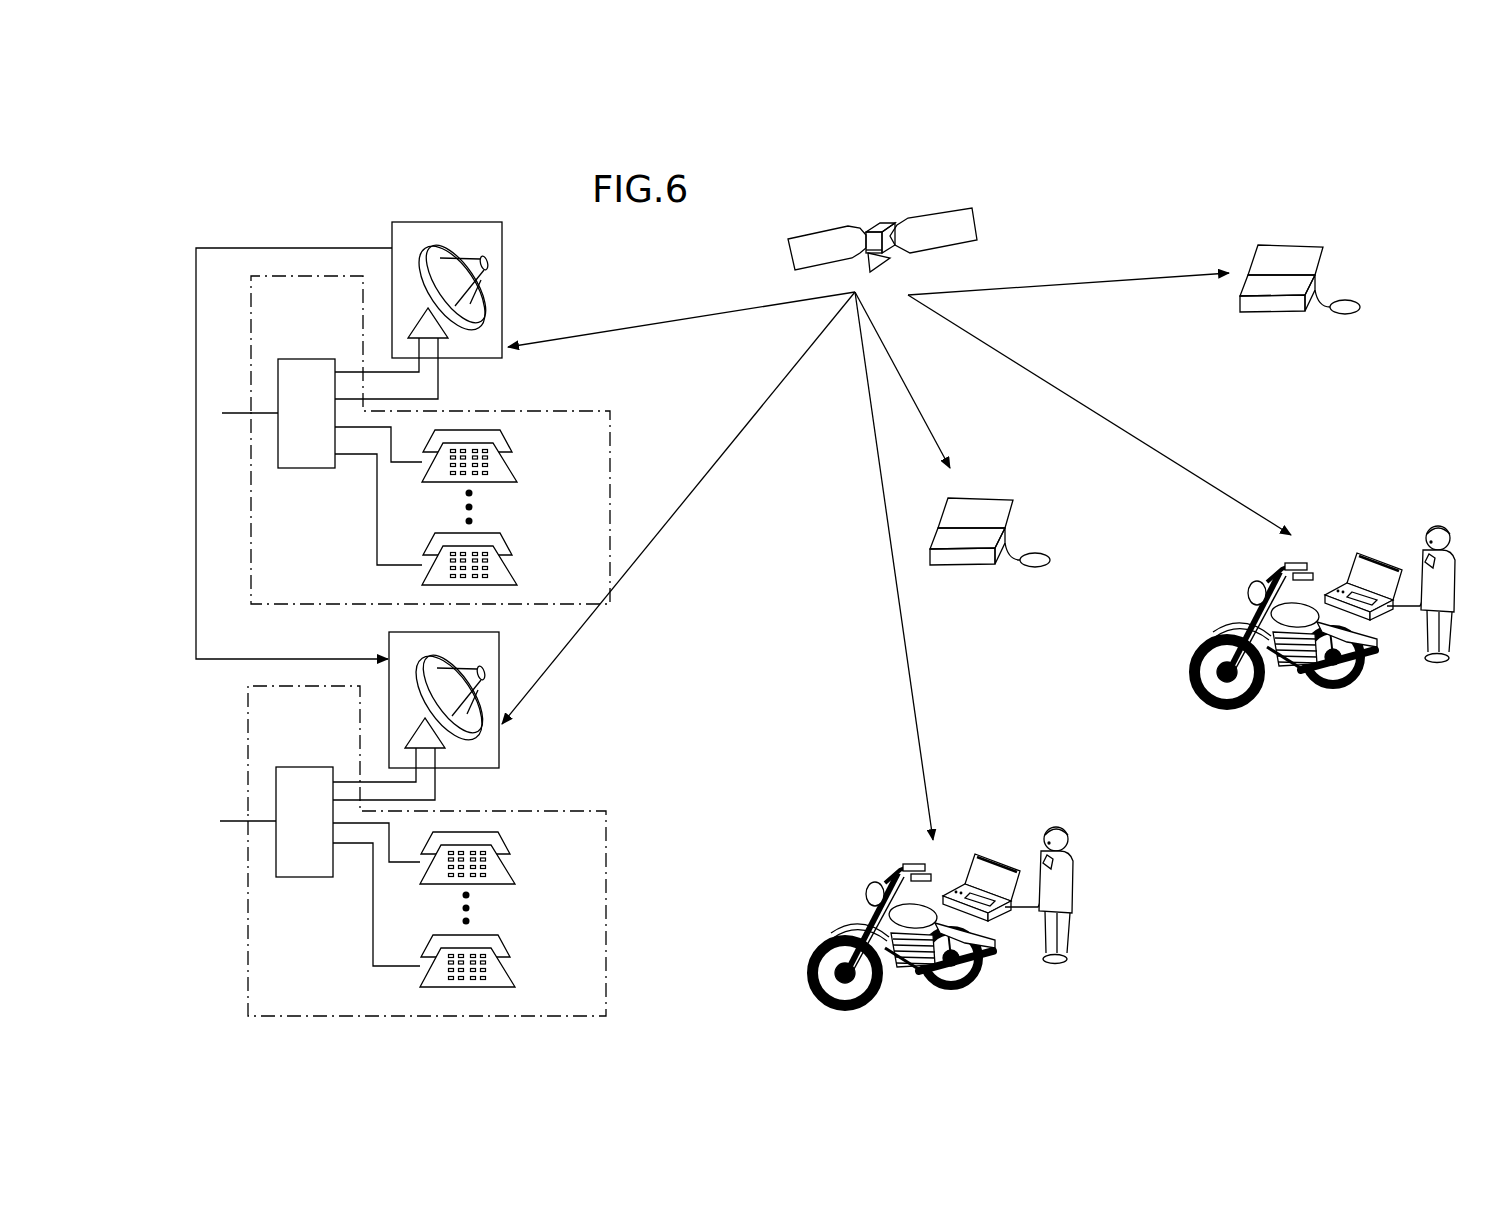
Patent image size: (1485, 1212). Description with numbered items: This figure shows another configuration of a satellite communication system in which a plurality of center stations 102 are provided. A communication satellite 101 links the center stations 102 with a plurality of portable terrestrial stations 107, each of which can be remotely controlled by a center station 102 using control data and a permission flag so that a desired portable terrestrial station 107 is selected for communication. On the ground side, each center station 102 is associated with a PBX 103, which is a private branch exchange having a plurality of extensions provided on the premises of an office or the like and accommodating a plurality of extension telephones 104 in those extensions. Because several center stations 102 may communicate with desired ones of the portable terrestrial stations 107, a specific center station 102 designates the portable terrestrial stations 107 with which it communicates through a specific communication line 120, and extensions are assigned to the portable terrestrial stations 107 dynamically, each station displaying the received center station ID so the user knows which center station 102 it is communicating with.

The communication satellite 101 is at (893, 216).
The center station 102 is at (447, 221).
The PBX 103 is at (301, 359).
The extension telephones 104 is at (513, 446).
The portable terrestrial station 107 is at (1334, 254).
The specific communication line 120 is at (196, 632).